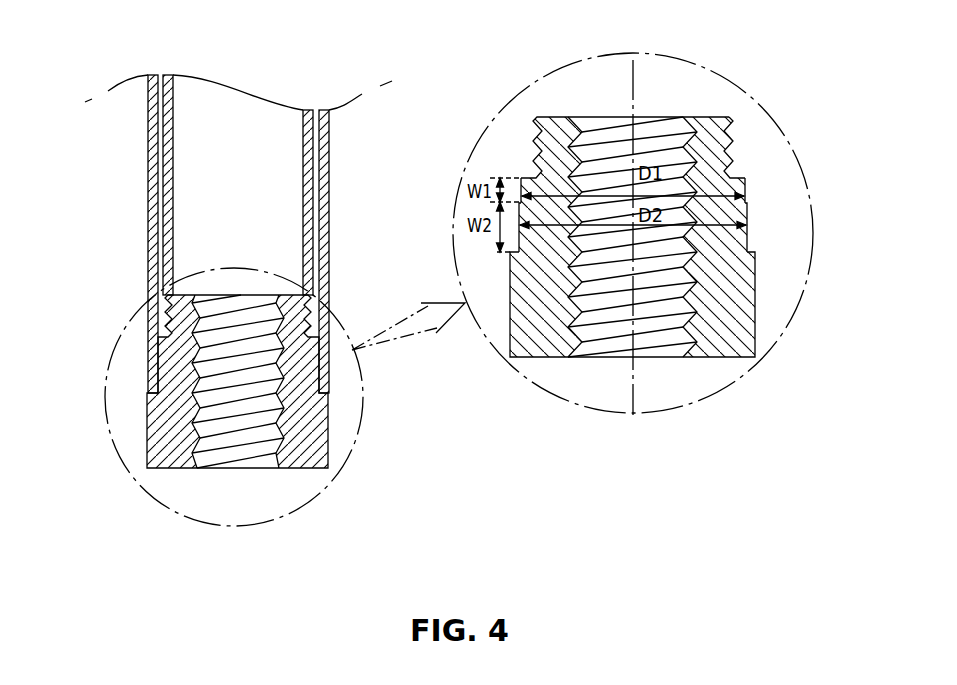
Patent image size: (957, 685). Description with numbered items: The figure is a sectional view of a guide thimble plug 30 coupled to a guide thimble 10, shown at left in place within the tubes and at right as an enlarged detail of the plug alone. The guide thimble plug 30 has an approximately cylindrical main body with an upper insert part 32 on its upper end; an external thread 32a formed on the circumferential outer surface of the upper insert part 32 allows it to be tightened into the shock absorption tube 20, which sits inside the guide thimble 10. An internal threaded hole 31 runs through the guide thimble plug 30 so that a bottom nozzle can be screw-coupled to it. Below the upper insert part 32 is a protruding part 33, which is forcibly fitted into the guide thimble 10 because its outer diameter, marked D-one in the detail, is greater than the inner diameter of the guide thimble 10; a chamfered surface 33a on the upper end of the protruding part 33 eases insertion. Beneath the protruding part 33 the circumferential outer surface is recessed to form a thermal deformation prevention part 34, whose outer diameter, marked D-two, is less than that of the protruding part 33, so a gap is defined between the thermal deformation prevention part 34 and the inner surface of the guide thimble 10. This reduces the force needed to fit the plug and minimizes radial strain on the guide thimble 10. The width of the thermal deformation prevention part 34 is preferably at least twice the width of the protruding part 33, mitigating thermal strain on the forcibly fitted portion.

The guide thimble 10 is at (329, 272).
The shock absorption tube 20 is at (310, 200).
The guide thimble plug 30 is at (136, 420).
The internal threaded hole 31 is at (667, 357).
The upper insert part 32 is at (708, 121).
The external thread 32a is at (732, 145).
The protruding part 33 is at (745, 195).
The chamfered surface 33a is at (743, 180).
The thermal deformation prevention part 34 is at (745, 230).